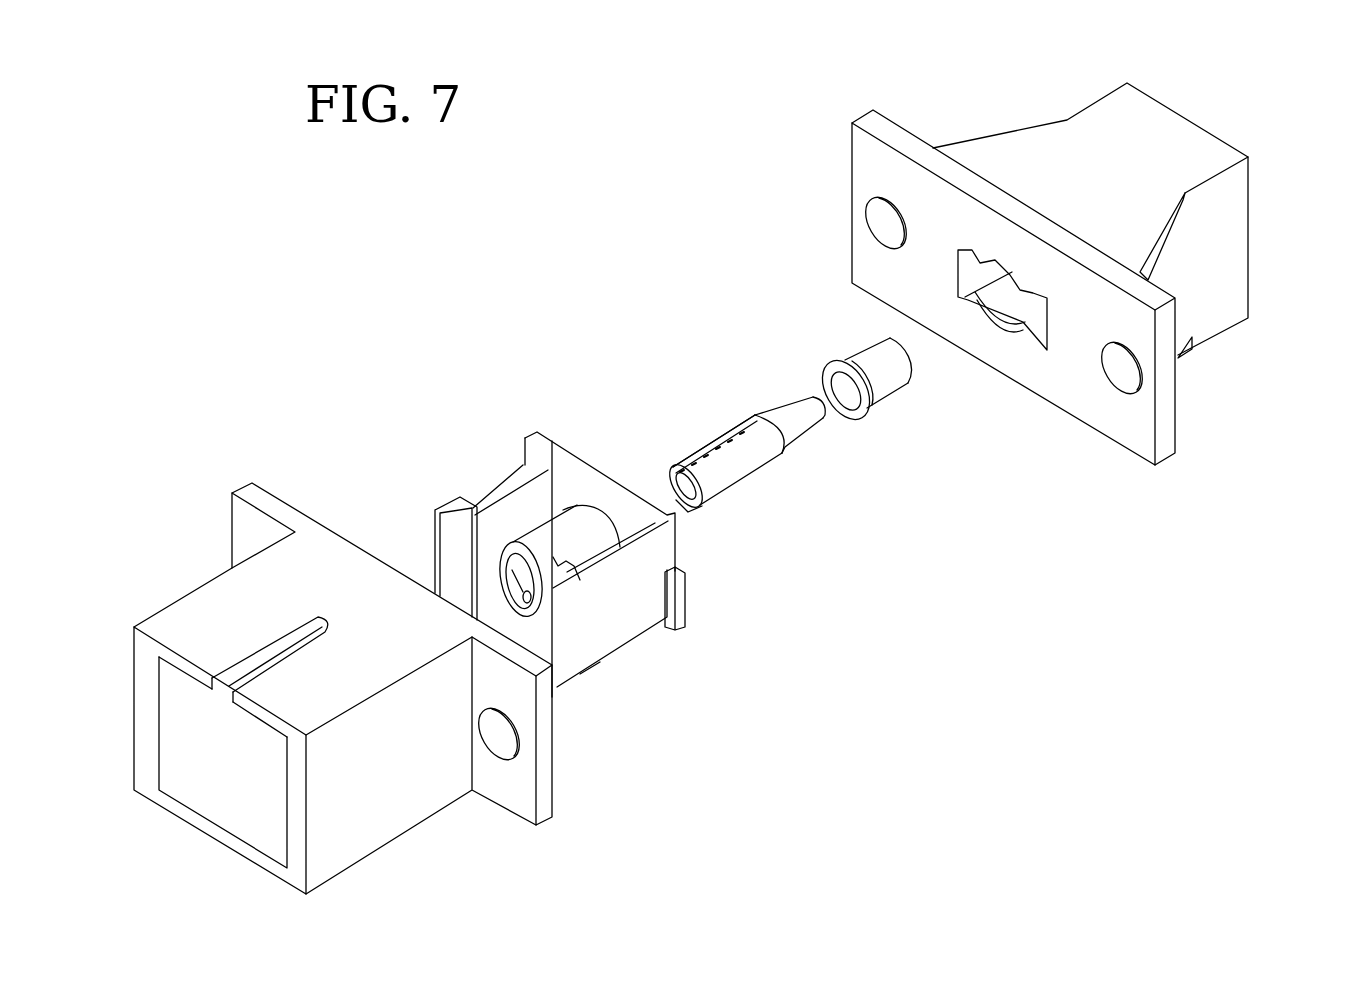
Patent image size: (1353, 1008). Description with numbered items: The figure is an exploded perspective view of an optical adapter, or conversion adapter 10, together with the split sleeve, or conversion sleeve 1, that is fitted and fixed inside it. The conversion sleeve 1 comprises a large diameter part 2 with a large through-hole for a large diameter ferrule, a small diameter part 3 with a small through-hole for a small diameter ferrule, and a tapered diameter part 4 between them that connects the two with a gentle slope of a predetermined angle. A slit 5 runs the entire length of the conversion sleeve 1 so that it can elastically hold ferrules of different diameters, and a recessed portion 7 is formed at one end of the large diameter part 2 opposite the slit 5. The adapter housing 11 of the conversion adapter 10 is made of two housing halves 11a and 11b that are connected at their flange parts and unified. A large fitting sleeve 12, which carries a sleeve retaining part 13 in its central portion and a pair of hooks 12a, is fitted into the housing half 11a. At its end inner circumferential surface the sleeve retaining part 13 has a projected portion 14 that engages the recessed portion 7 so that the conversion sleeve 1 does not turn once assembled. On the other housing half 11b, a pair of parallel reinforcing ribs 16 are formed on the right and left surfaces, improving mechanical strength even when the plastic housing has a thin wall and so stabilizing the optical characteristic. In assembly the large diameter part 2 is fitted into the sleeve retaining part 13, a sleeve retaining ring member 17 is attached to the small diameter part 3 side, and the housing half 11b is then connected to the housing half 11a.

The split sleeve (conversion sleeve) 1 is at (757, 482).
The large diameter part 2 is at (723, 487).
The small diameter part 3 is at (808, 418).
The tapered diameter part 4 is at (782, 447).
The slit 5 is at (703, 447).
The recessed portion 7 is at (687, 508).
The optical adapter (conversion adapter) 10 is at (318, 388).
The adapter housing 11 is at (1212, 407).
The housing half 11a is at (165, 622).
The housing half 11b is at (975, 152).
The large fitting sleeve 12 is at (627, 612).
The hooks 12a is at (463, 497).
The sleeve retaining part (axial cylindrical part) 13 is at (563, 527).
The projected portion 14 is at (583, 658).
The reinforcing ribs 16 is at (1157, 245).
The sleeve retaining ring member 17 is at (882, 388).